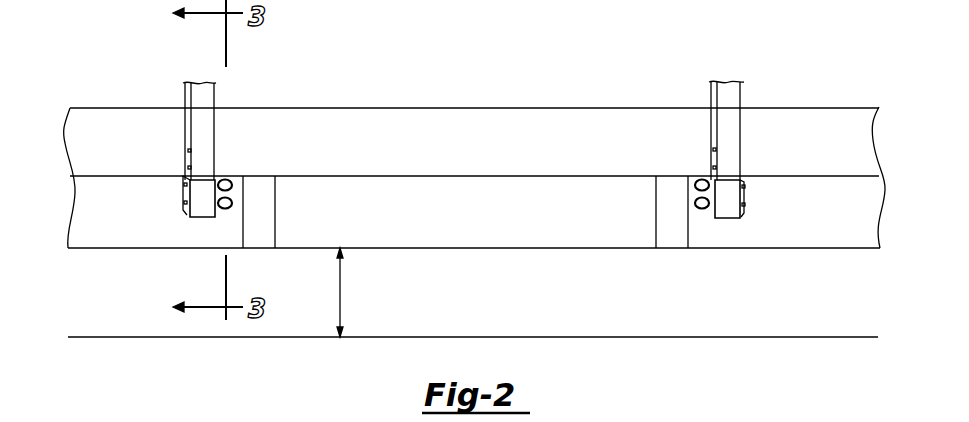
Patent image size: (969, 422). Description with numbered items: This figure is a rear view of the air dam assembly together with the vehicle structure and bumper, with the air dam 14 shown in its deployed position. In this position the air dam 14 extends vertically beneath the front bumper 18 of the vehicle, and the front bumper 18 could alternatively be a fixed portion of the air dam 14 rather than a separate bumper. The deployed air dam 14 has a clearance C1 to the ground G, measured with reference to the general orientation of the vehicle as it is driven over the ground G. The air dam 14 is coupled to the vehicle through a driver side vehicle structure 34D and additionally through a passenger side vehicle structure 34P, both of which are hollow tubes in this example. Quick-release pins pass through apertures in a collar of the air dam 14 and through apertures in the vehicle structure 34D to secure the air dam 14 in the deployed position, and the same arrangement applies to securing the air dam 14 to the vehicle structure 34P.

The air dam 14 is at (500, 217).
The front bumper 18 is at (108, 132).
The driver side vehicle structure 34D is at (185, 129).
The passenger side vehicle structure 34P is at (740, 130).
The ground G is at (167, 337).
The clearance C1 is at (338, 292).